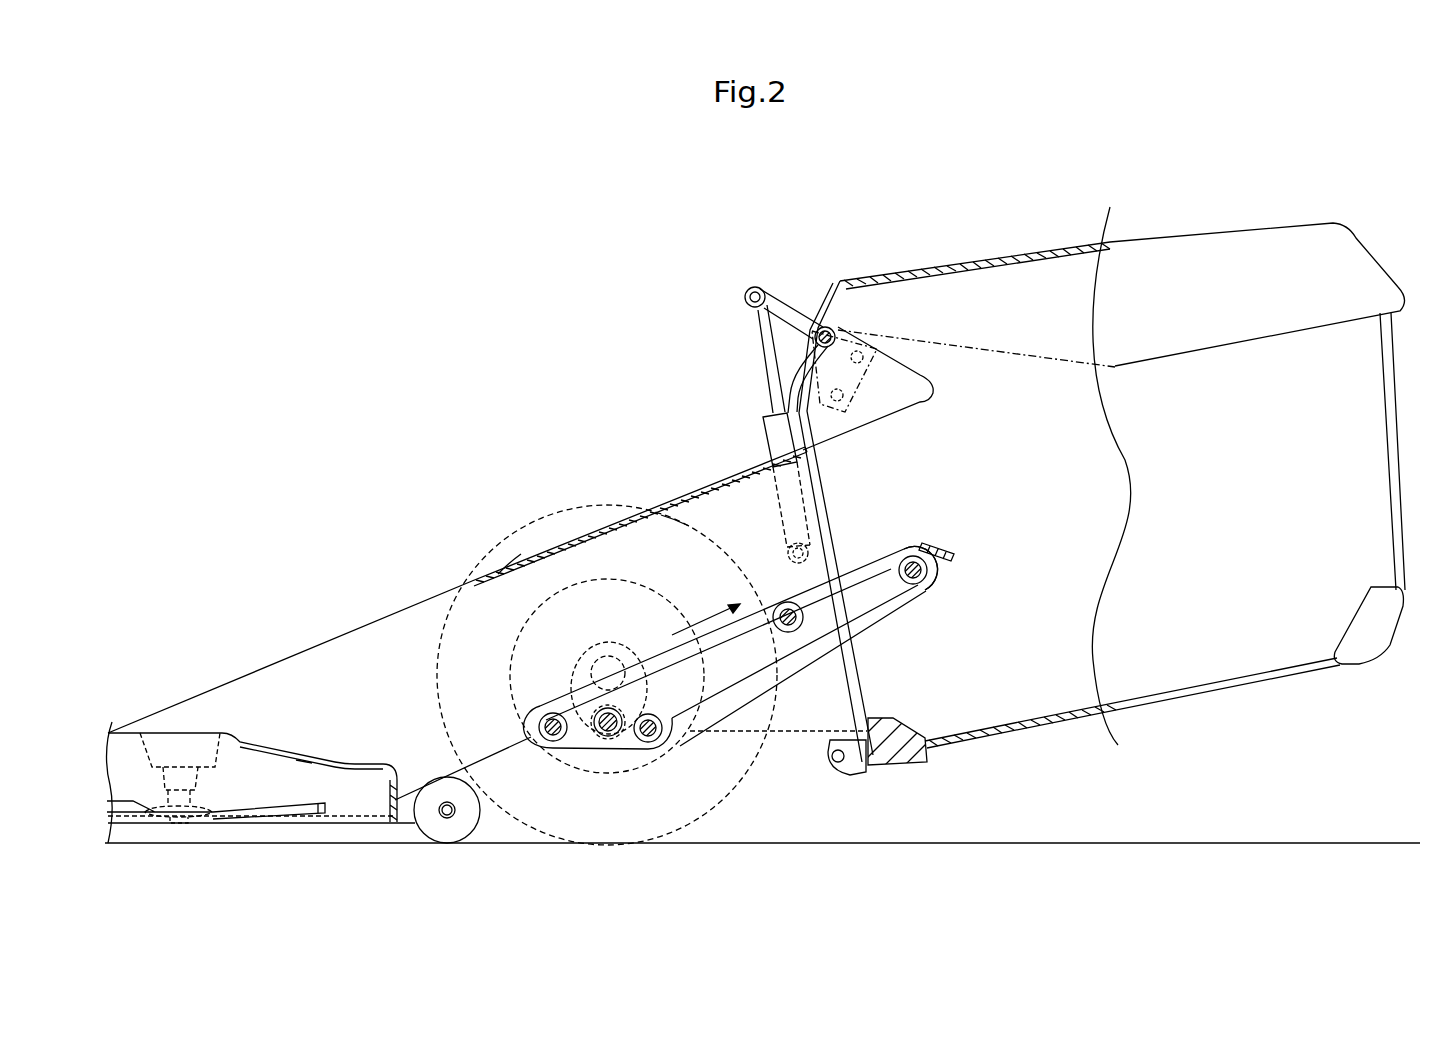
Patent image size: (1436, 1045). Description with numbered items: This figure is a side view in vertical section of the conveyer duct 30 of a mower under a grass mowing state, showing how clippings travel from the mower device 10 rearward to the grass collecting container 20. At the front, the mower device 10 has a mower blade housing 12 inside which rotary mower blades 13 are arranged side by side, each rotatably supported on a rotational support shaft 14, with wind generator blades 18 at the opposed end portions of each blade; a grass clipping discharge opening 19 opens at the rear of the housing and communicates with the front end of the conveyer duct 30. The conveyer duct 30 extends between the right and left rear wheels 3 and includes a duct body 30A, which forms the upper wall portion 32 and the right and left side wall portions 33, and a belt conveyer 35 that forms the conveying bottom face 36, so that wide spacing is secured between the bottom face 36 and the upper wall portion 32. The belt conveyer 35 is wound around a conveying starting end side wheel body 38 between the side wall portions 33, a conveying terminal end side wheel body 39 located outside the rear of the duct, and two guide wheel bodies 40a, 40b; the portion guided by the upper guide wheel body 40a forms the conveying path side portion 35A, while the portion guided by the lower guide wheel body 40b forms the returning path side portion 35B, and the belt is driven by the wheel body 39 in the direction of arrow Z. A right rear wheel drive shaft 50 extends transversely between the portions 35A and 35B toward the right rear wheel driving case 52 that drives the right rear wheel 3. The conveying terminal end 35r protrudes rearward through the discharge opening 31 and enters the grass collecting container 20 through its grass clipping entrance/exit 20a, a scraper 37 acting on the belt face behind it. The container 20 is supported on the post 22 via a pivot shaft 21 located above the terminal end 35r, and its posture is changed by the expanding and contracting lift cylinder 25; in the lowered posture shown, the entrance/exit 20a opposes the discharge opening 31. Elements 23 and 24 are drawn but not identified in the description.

The rear wheel 3 is at (682, 822).
The mower device 10 is at (183, 733).
The mower blade housing 12 is at (246, 742).
The rotary mower blade 13 is at (226, 809).
The rotational support shaft 14 is at (180, 824).
The wind generator blade 18 is at (318, 814).
The grass clipping discharge opening 19 is at (305, 764).
The grass collecting container 20 is at (1194, 700).
The grass clipping entrance/exit 20a is at (800, 497).
The pivot shaft 21 is at (827, 327).
The post 22 is at (806, 378).
The support plate 23 is at (921, 401).
The frame line 24 is at (910, 354).
The lift cylinder 25 is at (775, 443).
The conveyer duct 30 is at (323, 662).
The duct body 30A is at (584, 533).
The discharge opening 31 is at (829, 498).
The upper wall portion 32 is at (520, 562).
The side wall portion 33 is at (670, 533).
The belt conveyer 35 is at (747, 658).
The conveying path side portion 35A is at (650, 658).
The returning path side portion 35B is at (841, 668).
The conveying terminal end 35r is at (893, 550).
The conveying bottom face 36 is at (647, 640).
The scraper 37 is at (951, 550).
The conveying starting end side wheel body 38 is at (547, 742).
The conveying terminal end side wheel body 39 is at (928, 584).
The guide wheel body 40a is at (777, 630).
The guide wheel body 40b is at (656, 743).
The right rear wheel drive shaft 50 is at (606, 740).
The right rear wheel driving case 52 is at (578, 683).
The rotation direction Z is at (706, 605).